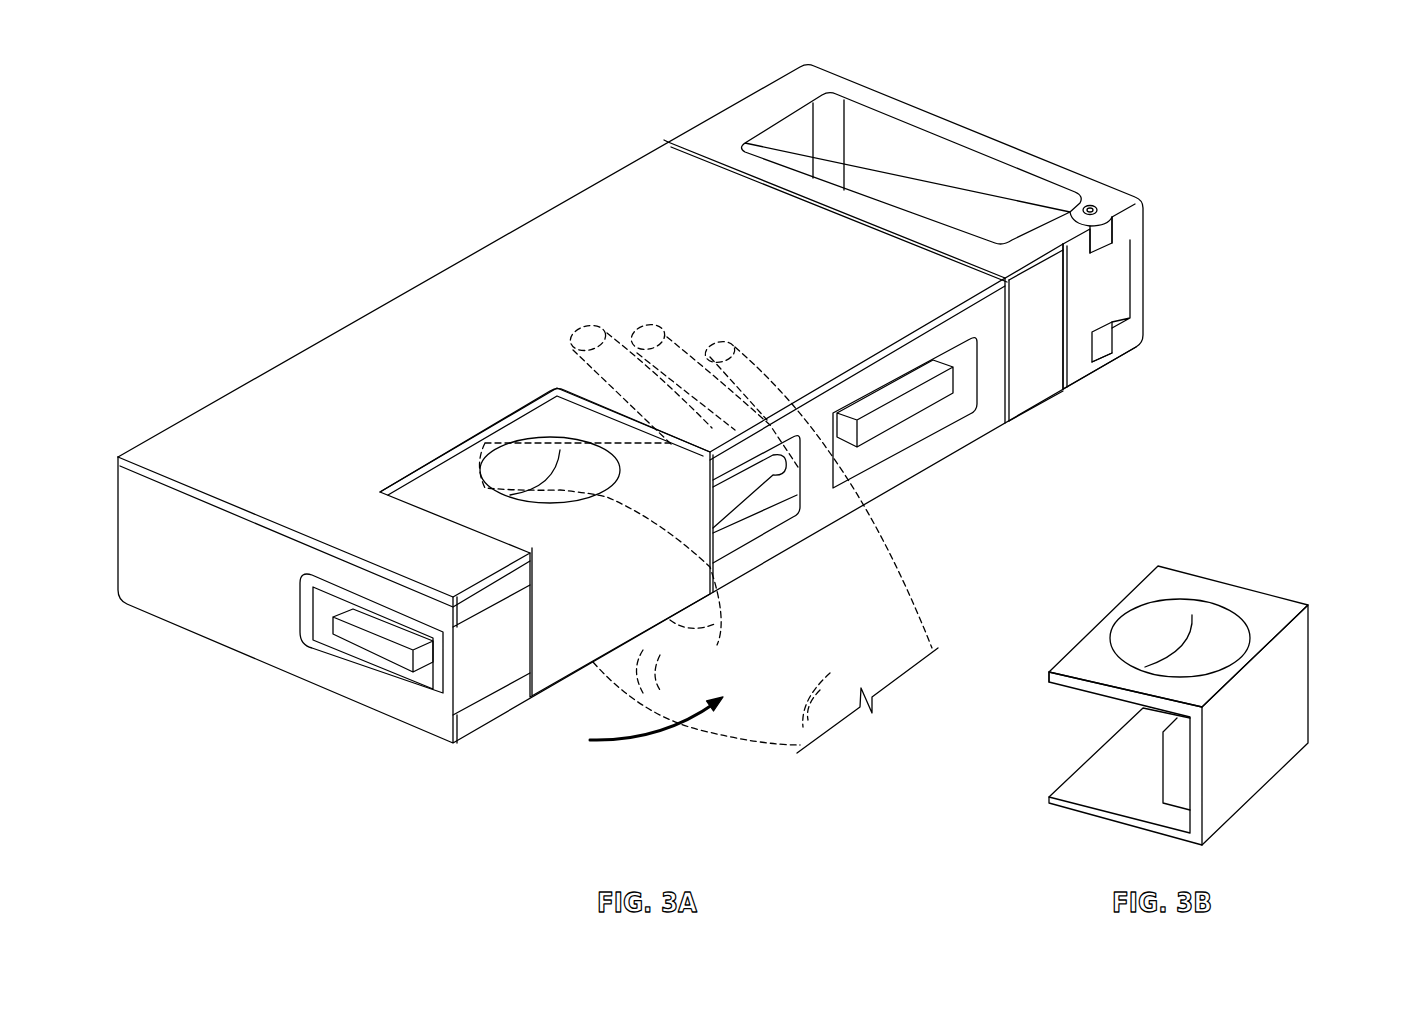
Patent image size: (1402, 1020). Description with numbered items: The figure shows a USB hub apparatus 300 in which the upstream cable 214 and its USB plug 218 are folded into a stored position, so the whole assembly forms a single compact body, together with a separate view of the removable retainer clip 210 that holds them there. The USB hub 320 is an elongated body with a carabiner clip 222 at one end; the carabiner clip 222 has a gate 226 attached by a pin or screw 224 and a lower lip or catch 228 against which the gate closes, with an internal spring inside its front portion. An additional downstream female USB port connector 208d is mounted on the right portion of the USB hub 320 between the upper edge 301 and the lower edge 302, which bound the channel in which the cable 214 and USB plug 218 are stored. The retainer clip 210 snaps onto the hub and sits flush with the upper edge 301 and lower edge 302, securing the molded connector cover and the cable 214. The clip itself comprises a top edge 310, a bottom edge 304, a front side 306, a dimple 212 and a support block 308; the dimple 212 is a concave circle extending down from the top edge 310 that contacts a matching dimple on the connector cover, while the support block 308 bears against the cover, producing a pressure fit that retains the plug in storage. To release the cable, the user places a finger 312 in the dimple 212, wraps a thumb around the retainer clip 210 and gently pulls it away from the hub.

In FIG. 3A, the USB hub apparatus 300 is at (208, 190).
In FIG. 3A, the USB hub 320 is at (210, 422).
In FIG. 3A, the carabiner clip 222 is at (883, 92).
In FIG. 3A, the pin or screw 224 is at (1093, 204).
In FIG. 3A, the gate 226 is at (1098, 290).
In FIG. 3A, the upper edge 301 is at (985, 300).
In FIG. 3A, the lower lip or catch 228 is at (1043, 387).
In FIG. 3A, the downstream USB port connector 208d is at (950, 432).
In FIG. 3A, the upstream cable 214 is at (772, 467).
In FIG. 3A, the retainer clip 210 is at (547, 673).
In FIG. 3B, the retainer clip 210 is at (1222, 566).
In FIG. 3A, the dimple 212 is at (526, 447).
In FIG. 3B, the dimple 212 is at (1126, 628).
In FIG. 3A, the lower edge 302 is at (467, 727).
In FIG. 3A, the USB plug 218 is at (460, 663).
In FIG. 3A, the finger 312 is at (590, 328).
In FIG. 3B, the front side 306 is at (1296, 672).
In FIG. 3B, the bottom edge 304 is at (1172, 840).
In FIG. 3B, the top edge 310 is at (1045, 678).
In FIG. 3B, the support block 308 is at (1163, 768).